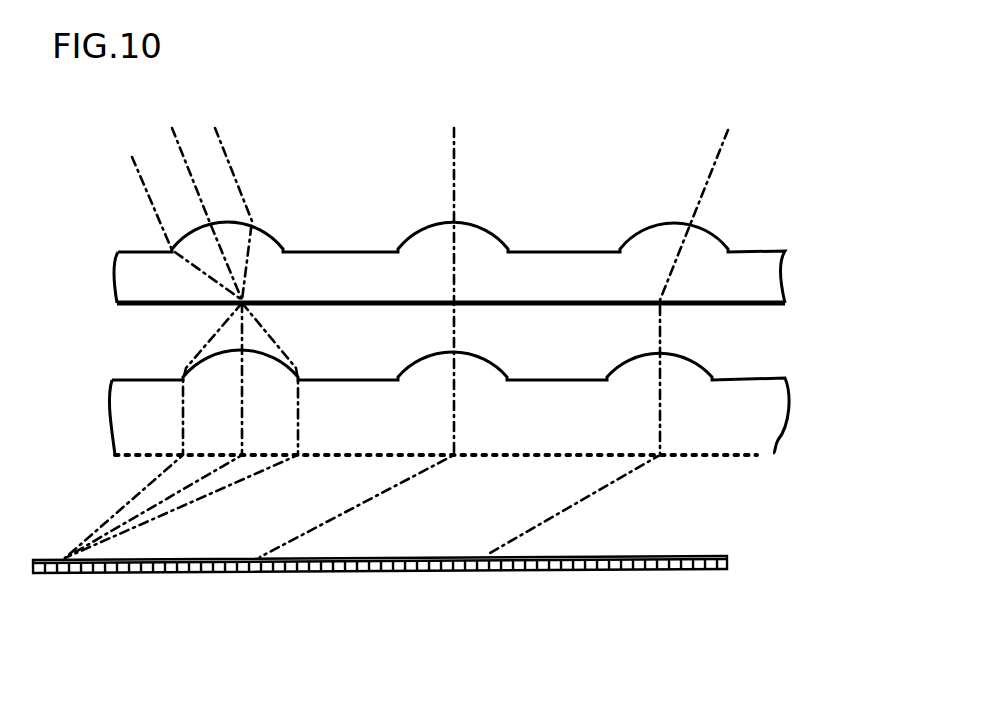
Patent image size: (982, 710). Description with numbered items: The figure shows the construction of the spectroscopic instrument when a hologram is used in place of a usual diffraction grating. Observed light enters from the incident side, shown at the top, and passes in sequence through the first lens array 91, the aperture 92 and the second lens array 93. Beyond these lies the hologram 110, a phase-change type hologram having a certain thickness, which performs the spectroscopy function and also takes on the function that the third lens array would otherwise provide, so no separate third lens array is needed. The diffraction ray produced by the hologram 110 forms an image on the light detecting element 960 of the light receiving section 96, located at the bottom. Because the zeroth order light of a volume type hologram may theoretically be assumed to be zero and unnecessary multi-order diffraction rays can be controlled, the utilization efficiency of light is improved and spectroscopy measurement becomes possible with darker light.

The first lens array 91 is at (775, 242).
The aperture 92 is at (143, 305).
The second lens array 93 is at (763, 375).
The hologram 110 is at (757, 456).
The light receiving section 96 is at (637, 567).
The light detecting element 960 is at (65, 565).